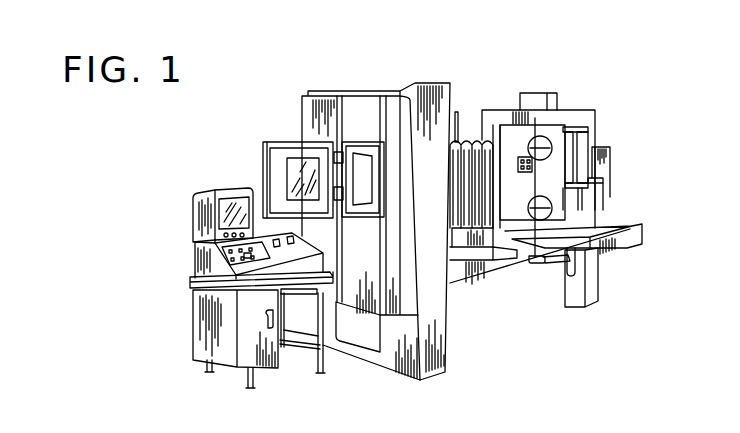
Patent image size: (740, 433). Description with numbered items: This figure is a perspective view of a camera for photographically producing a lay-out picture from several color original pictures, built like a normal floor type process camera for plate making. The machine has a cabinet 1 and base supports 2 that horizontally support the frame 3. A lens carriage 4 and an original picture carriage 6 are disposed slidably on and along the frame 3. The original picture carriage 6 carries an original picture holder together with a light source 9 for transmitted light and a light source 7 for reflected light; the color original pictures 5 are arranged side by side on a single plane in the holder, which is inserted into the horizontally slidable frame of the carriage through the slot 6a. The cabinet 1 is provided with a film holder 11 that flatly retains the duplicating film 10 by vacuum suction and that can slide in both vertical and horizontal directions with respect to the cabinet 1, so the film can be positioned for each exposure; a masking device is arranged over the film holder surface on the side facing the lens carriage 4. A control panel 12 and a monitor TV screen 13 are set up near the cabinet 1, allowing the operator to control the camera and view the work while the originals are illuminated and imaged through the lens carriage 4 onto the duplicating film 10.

The cabinet 1 is at (436, 374).
The base supports 2 is at (574, 308).
The frame 3 is at (477, 290).
The lens carriage 4 is at (508, 272).
The color original pictures 5 is at (522, 157).
The original picture carriage 6 is at (498, 112).
The slot 6a is at (580, 145).
The light source for reflected light 7 is at (549, 140).
The light source for transmitted light 9 is at (608, 146).
The duplicating film 10 is at (292, 158).
The film holder 11 is at (265, 145).
The control panel 12 is at (195, 257).
The monitor TV screen 13 is at (206, 188).